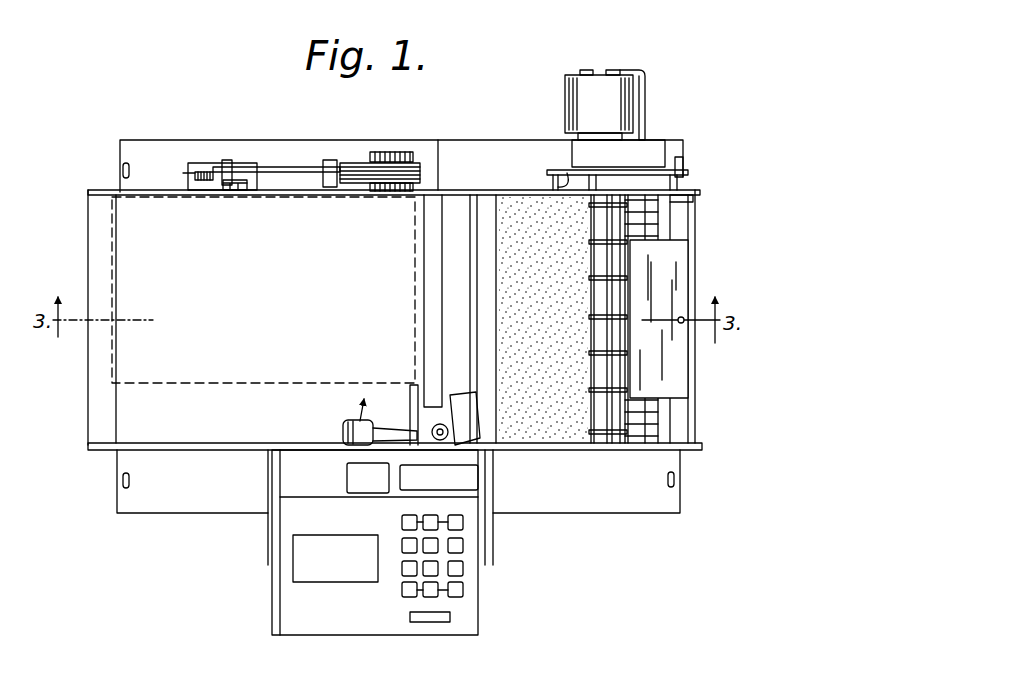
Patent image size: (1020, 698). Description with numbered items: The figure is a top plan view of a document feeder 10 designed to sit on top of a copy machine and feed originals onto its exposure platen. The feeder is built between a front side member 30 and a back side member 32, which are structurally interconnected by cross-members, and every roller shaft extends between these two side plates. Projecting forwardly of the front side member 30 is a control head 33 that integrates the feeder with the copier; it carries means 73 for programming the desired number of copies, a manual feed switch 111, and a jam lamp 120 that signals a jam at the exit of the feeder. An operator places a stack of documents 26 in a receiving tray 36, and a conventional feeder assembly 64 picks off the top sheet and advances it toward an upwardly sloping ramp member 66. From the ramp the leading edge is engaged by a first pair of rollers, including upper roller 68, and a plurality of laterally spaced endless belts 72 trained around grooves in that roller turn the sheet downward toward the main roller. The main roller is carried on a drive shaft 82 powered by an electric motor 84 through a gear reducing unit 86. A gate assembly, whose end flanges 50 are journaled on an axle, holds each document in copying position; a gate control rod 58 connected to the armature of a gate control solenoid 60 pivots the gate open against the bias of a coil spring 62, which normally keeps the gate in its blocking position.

The document feeder 10 is at (600, 559).
The documents 26 is at (300, 309).
The front side member 30 is at (552, 451).
The back side member 32 is at (487, 190).
The control head 33 is at (295, 608).
The receiving tray 36 is at (135, 428).
The end flanges 50 is at (240, 190).
The gate control rod 58 is at (287, 167).
The gate control solenoid 60 is at (396, 165).
The coil spring 62 is at (203, 172).
The feeder assembly 64 is at (334, 423).
The ramp member 66 is at (545, 286).
The upper roller 68 is at (592, 372).
The endless belts 72 is at (601, 240).
The programming means 73 is at (472, 581).
The drive shaft 82 is at (567, 173).
The electric motor 84 is at (598, 85).
The gear reducing unit 86 is at (643, 153).
The manual feed switch 111 is at (330, 583).
The jam lamp 120 is at (347, 474).